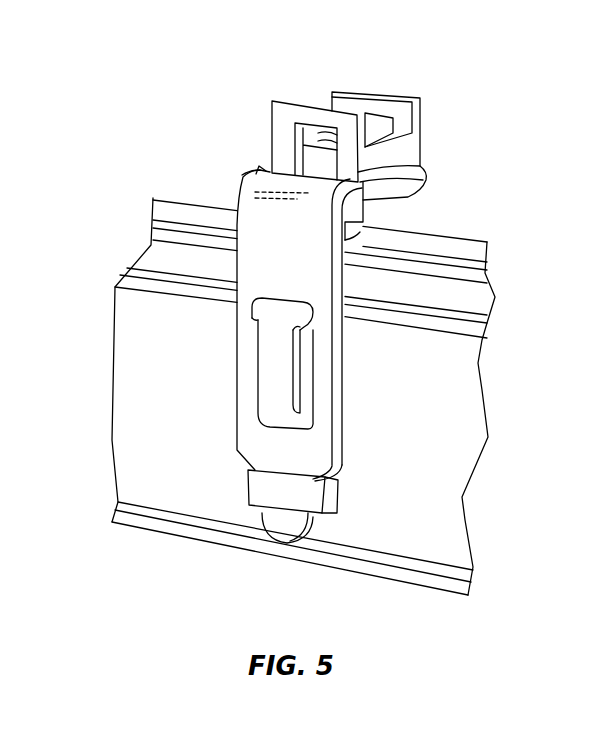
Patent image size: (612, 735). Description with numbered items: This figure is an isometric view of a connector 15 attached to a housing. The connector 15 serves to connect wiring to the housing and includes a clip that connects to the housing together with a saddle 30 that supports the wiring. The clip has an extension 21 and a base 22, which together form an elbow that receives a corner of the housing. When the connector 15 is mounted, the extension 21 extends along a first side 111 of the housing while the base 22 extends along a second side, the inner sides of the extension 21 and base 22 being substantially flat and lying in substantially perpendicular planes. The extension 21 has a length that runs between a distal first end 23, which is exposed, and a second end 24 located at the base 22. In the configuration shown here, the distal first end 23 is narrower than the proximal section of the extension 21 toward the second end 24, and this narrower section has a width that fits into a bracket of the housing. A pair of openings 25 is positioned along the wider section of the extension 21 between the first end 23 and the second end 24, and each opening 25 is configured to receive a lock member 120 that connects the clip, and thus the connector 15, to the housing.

The connector 15 is at (240, 100).
The extension 21 is at (282, 250).
The base 22 is at (420, 180).
The first end 23 is at (285, 545).
The second end 24 is at (272, 188).
The opening 25 is at (288, 300).
The saddle 30 is at (382, 157).
The first side 111 is at (138, 352).
The lock member 120 is at (267, 370).